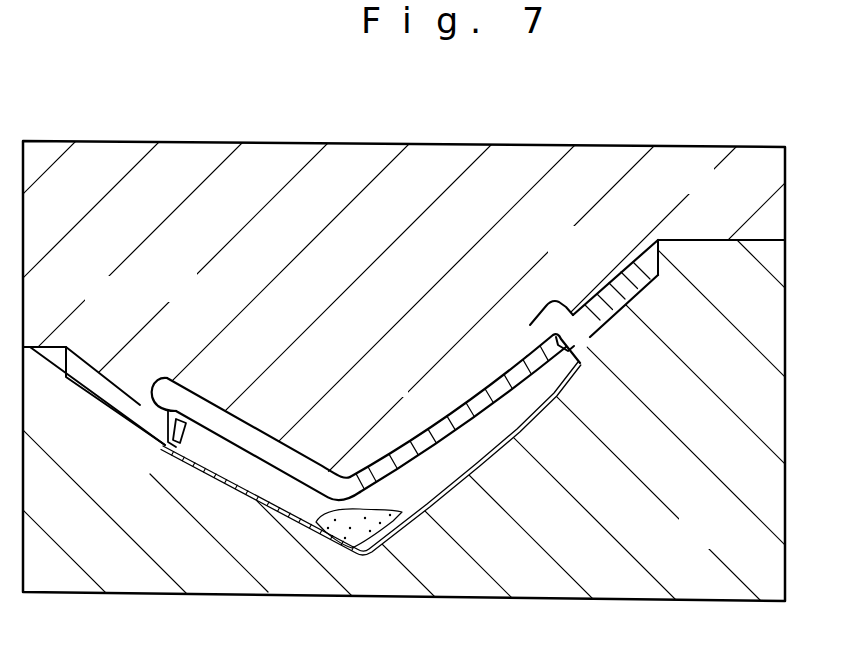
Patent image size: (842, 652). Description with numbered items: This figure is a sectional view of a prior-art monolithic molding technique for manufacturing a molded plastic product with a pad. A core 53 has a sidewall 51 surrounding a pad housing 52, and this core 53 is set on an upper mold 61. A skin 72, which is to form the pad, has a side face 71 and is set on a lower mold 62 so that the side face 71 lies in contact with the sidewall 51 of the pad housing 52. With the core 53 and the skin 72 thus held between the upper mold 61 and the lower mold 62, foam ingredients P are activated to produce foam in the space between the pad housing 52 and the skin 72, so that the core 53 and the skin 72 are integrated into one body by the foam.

The sidewall 51 is at (157, 380).
The pad housing 52 is at (408, 473).
The core 53 is at (88, 378).
The upper mold 61 is at (708, 190).
The lower mold 62 is at (723, 545).
The side face 71 is at (177, 430).
The skin 72 is at (433, 500).
The foam ingredients P is at (333, 546).